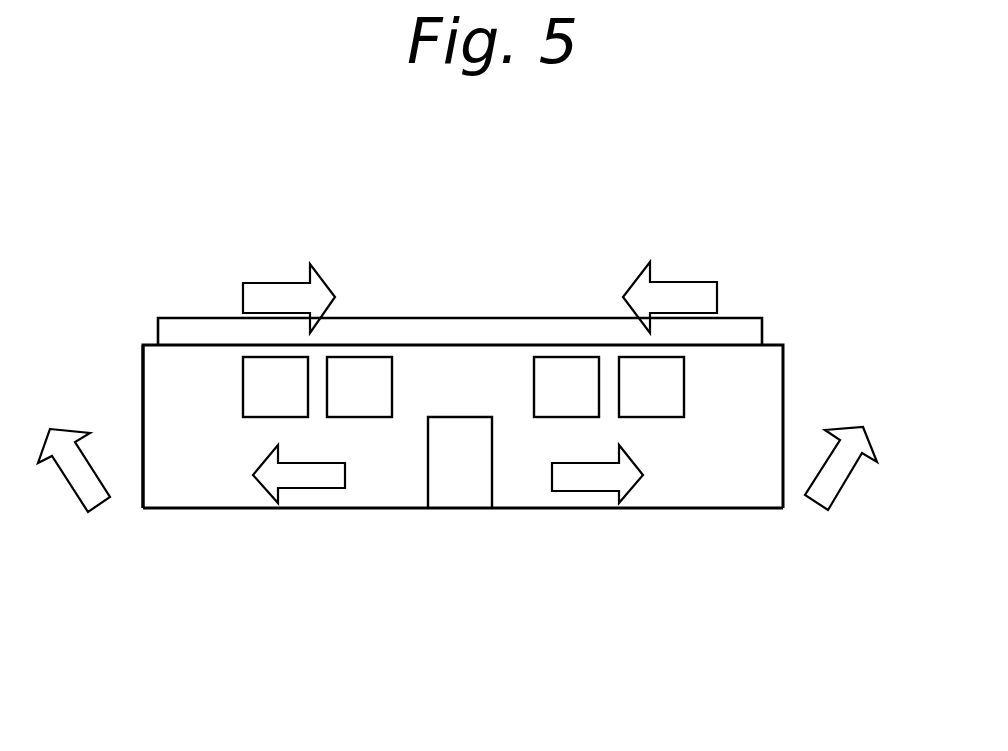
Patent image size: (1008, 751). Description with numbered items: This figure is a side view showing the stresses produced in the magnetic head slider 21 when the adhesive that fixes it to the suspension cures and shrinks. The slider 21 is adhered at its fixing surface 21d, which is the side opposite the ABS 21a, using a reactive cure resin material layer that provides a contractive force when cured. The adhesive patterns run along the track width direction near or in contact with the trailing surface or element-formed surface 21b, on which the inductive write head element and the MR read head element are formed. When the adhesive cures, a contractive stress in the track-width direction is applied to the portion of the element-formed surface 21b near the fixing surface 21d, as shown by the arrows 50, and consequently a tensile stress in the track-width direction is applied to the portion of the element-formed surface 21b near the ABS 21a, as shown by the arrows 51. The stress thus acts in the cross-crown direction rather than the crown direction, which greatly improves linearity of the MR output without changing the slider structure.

The magnetic head slider 21 is at (695, 478).
The ABS 21a is at (530, 508).
The element-formed surface 21b is at (229, 480).
The fixing surface 21d is at (465, 345).
The arrows indicating contractive stress 50 is at (270, 297).
The arrows indicating tensile stress 51 is at (307, 472).